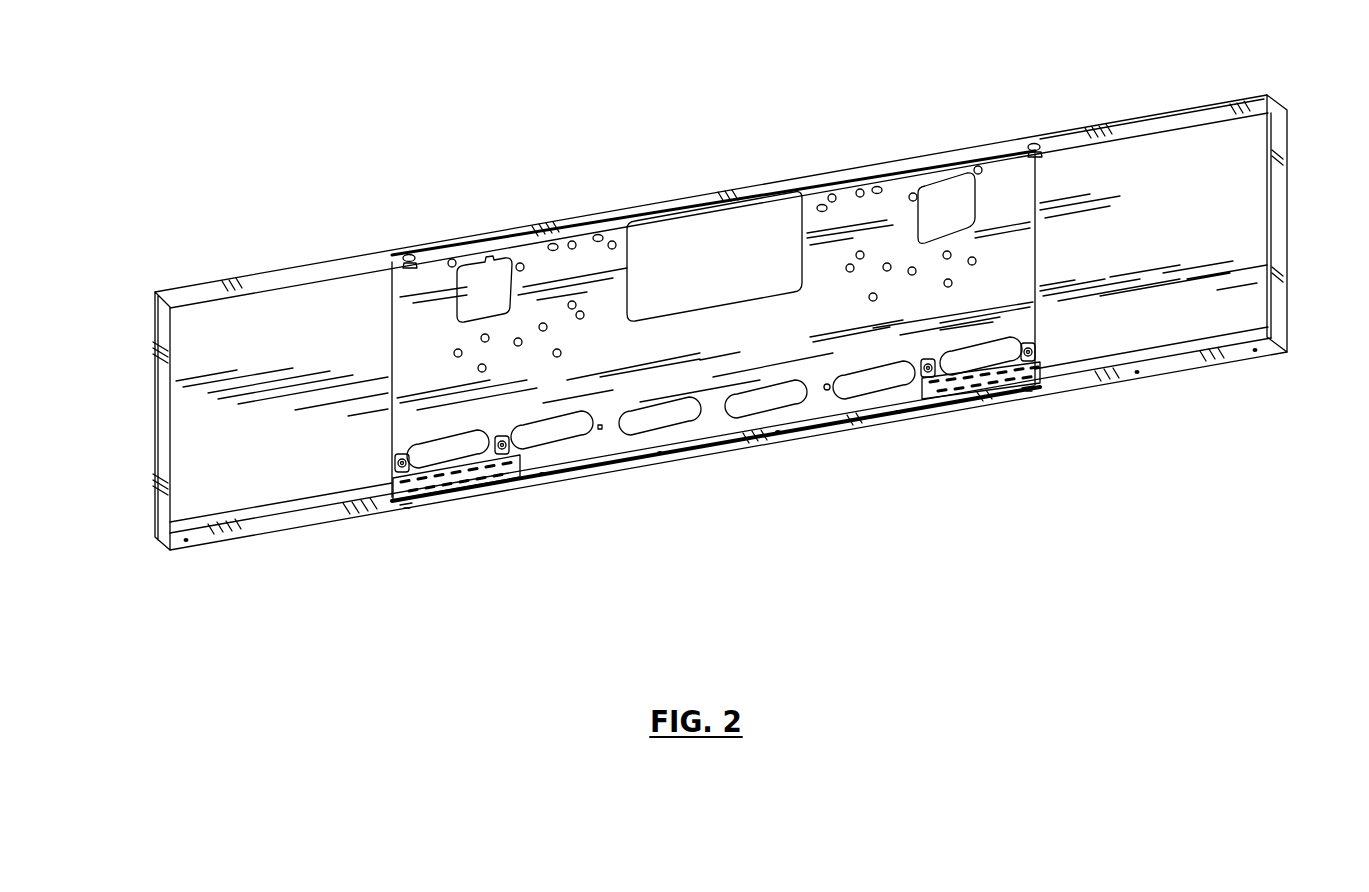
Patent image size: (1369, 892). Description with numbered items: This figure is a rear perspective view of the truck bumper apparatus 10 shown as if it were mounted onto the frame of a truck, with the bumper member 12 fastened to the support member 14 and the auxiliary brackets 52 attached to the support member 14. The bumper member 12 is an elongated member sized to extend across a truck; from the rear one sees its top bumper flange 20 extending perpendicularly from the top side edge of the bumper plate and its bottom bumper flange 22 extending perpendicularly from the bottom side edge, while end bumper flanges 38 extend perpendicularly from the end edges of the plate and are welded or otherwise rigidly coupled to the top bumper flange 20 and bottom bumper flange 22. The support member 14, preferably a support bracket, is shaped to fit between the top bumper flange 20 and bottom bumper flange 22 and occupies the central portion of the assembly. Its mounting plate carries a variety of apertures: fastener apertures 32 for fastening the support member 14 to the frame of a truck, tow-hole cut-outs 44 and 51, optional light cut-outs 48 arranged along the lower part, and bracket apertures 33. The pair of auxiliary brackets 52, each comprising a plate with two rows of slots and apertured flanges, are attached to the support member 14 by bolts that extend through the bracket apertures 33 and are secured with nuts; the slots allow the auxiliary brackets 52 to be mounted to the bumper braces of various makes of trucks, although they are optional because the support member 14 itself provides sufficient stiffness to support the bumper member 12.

The truck bumper apparatus 10 is at (721, 312).
The bumper member 12 is at (1296, 224).
The support member 14 is at (372, 440).
The top bumper flange 20 is at (1128, 131).
The bottom bumper flange 22 is at (1160, 367).
The fastener apertures 32 is at (548, 329).
The bracket apertures 33 is at (827, 391).
The end bumper flanges 38 is at (160, 417).
The tow-hole cut-out 44 is at (491, 274).
The light cut-outs 48 is at (572, 445).
The tow-hole cut-out 51 is at (711, 224).
The auxiliary brackets 52 is at (468, 480).